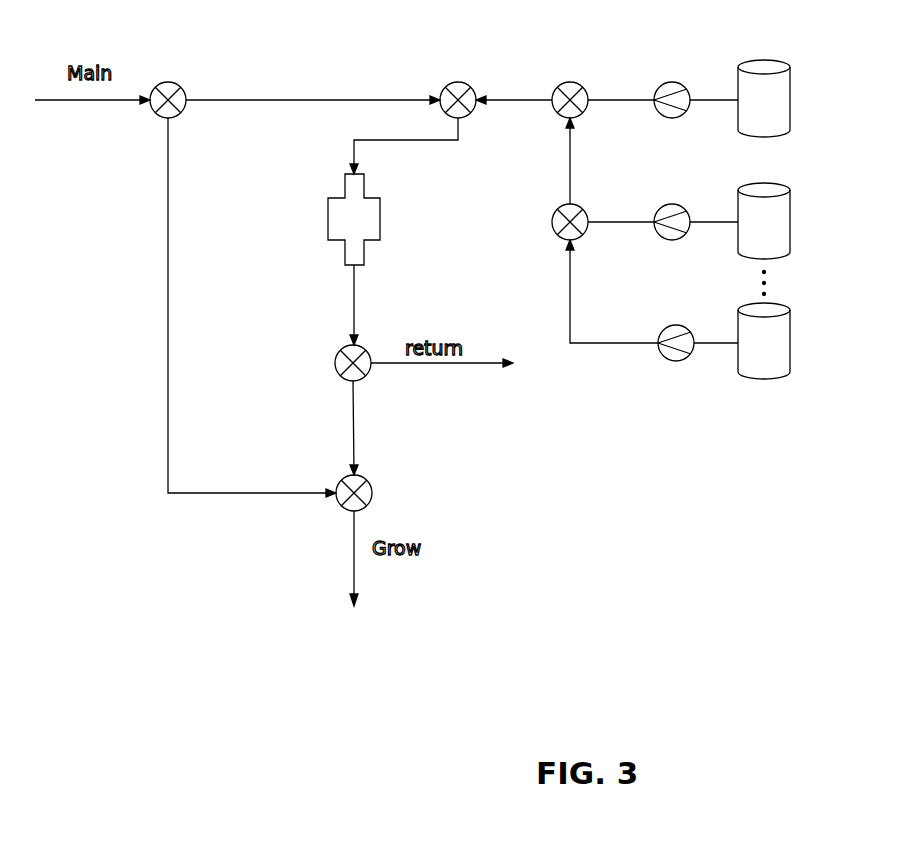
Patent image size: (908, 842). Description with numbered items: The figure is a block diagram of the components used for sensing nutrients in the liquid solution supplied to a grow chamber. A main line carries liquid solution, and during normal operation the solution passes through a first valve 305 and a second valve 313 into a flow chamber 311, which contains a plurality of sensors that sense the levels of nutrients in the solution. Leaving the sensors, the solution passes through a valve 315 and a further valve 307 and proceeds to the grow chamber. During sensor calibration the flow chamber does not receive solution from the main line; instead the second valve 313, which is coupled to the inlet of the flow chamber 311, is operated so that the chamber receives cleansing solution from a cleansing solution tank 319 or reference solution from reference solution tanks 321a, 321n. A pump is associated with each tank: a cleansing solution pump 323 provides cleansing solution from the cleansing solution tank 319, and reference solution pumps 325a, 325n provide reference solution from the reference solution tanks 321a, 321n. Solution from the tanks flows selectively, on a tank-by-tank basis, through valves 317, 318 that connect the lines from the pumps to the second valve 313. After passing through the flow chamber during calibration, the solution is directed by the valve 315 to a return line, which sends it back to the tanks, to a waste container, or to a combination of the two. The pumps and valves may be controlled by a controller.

The first valve 305 is at (180, 88).
The valve 307 is at (372, 490).
The flow chamber 311 is at (328, 218).
The second valve 313 is at (466, 85).
The valve 315 is at (336, 360).
The valve 317 is at (578, 85).
The valve 318 is at (580, 207).
The cleansing solution tank 319 is at (792, 80).
The reference solution tank 321a is at (792, 212).
The reference solution tank 321n is at (792, 322).
The cleansing solution pump 323 is at (678, 83).
The reference solution pump 325a is at (676, 204).
The reference solution pump 325n is at (680, 324).